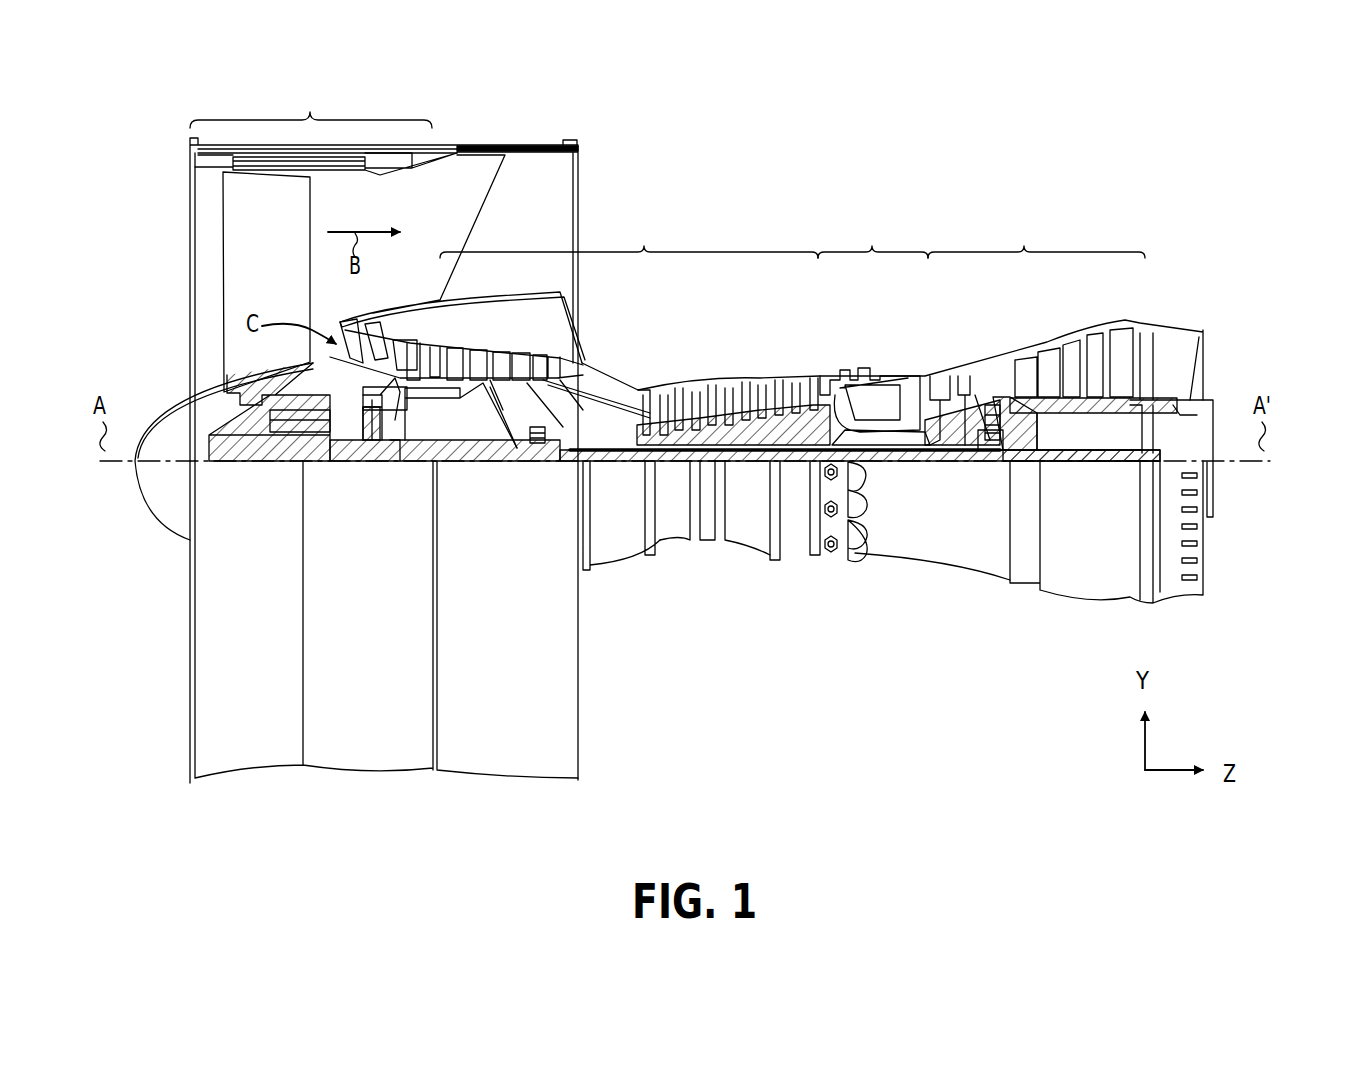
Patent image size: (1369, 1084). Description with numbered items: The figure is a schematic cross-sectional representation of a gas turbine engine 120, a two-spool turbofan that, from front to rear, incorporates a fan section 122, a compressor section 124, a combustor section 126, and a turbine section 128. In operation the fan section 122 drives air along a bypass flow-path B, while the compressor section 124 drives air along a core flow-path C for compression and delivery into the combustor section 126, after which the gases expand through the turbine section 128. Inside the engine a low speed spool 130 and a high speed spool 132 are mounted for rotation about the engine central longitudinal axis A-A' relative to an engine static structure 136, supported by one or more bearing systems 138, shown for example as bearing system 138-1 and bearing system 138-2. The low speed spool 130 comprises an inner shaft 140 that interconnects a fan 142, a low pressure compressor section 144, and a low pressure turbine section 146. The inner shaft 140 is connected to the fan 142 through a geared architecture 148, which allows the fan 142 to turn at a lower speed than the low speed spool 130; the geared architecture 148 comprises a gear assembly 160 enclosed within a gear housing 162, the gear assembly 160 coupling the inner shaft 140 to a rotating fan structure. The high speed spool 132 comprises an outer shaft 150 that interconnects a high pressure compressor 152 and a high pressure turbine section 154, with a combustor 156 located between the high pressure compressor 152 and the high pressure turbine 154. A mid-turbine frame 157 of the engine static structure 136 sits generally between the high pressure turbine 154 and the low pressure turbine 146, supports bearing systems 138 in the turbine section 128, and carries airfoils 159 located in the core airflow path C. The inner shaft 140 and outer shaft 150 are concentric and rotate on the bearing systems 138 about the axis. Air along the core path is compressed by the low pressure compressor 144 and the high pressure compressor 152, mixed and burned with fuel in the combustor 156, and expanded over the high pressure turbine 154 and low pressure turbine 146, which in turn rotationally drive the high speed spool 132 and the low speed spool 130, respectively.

The gas turbine engine 120 is at (716, 152).
The fan section 122 is at (384, 432).
The compressor section 124 is at (629, 233).
The combustor section 126 is at (873, 233).
The turbine section 128 is at (1036, 233).
The low speed spool 130 is at (751, 466).
The high speed spool 132 is at (786, 430).
The engine static structure 136 is at (796, 541).
The bearing system 138 is at (987, 461).
The bearing system 138-1 is at (270, 459).
The bearing system 138-2 is at (536, 461).
The inner shaft 140 is at (605, 461).
The fan 142 is at (266, 282).
The low pressure compressor section 144 is at (512, 358).
The low pressure turbine section 146 is at (1069, 346).
The geared architecture 148 is at (397, 482).
The outer shaft 150 is at (866, 461).
The high pressure compressor 152 is at (730, 394).
The high pressure turbine section 154 is at (940, 376).
The combustor 156 is at (868, 398).
The mid-turbine frame 157 is at (977, 395).
The airfoils 159 is at (988, 391).
The gear assembly 160 is at (392, 450).
The gear housing 162 is at (415, 405).